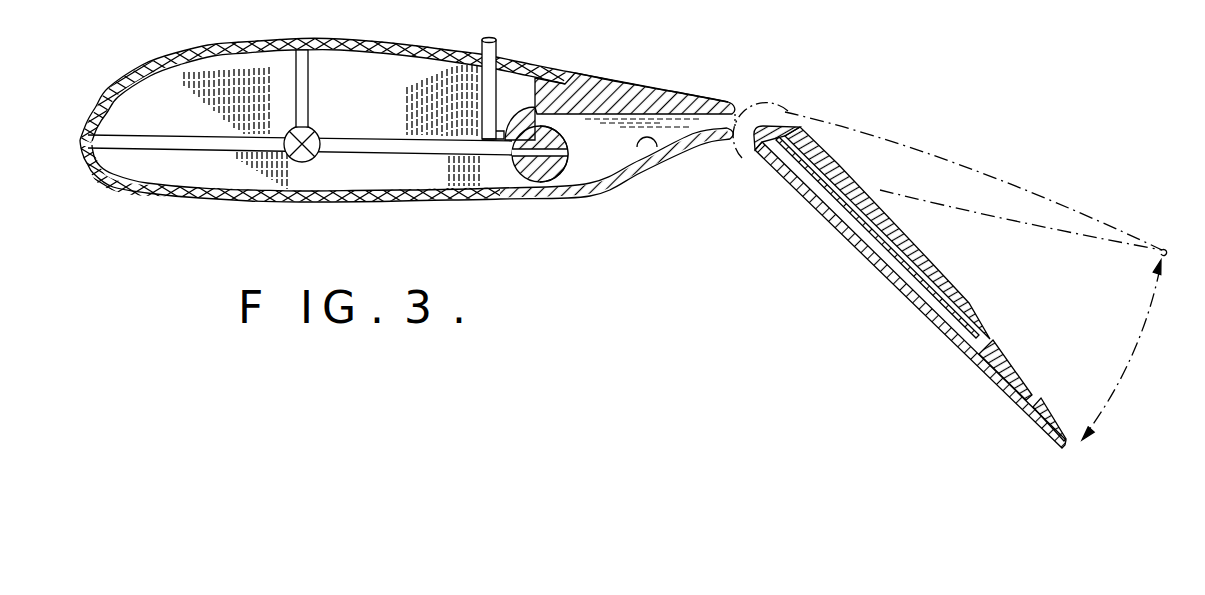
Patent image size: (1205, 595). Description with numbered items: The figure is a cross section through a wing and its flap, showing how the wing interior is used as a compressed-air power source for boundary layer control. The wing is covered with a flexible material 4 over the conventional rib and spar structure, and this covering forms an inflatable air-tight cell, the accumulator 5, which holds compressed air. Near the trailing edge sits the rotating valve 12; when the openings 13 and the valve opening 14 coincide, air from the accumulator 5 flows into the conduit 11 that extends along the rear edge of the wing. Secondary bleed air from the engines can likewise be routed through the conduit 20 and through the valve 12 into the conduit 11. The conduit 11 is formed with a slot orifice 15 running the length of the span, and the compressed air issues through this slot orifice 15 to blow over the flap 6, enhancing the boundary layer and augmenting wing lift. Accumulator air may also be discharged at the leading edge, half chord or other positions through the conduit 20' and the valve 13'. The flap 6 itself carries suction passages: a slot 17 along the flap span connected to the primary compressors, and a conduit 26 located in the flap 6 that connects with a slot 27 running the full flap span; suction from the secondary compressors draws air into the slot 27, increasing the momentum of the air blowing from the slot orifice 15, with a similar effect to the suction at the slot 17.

The flexible material 4 is at (238, 46).
The accumulator 5 is at (418, 177).
The flap 6 is at (925, 256).
The conduit 11 is at (647, 147).
The rotating valve 12 is at (548, 124).
The openings 13 is at (540, 189).
The valve 13' is at (322, 153).
The valve opening 14 is at (568, 188).
The slot orifice 15 is at (742, 118).
The slot 17 is at (990, 338).
The conduit 20 is at (471, 89).
The conduit 20' is at (343, 88).
The conduit 26 is at (913, 290).
The slot 27 is at (1041, 398).